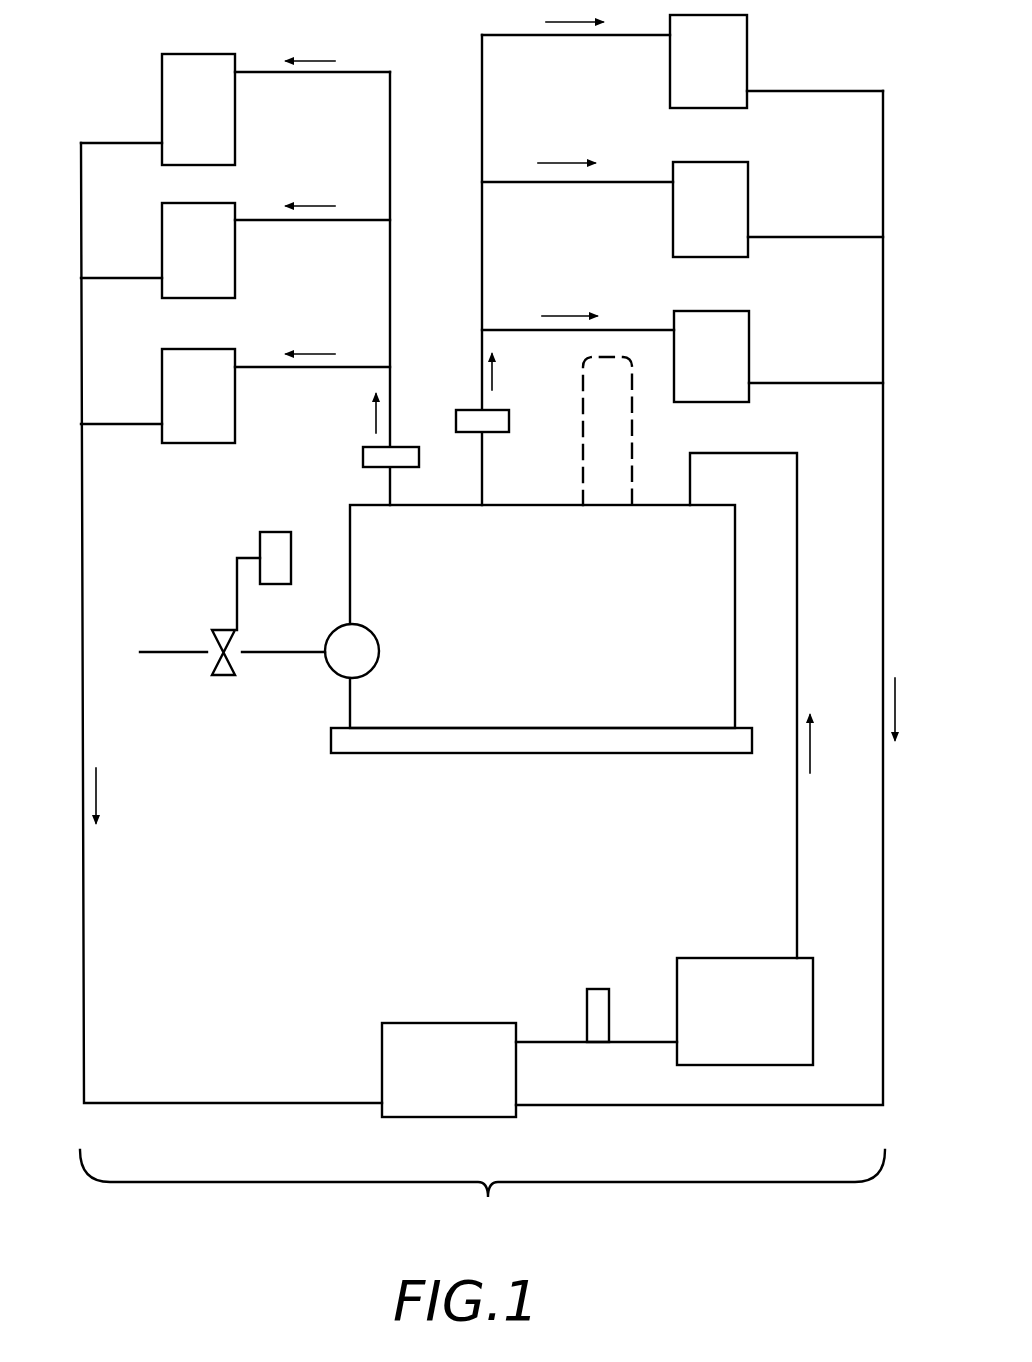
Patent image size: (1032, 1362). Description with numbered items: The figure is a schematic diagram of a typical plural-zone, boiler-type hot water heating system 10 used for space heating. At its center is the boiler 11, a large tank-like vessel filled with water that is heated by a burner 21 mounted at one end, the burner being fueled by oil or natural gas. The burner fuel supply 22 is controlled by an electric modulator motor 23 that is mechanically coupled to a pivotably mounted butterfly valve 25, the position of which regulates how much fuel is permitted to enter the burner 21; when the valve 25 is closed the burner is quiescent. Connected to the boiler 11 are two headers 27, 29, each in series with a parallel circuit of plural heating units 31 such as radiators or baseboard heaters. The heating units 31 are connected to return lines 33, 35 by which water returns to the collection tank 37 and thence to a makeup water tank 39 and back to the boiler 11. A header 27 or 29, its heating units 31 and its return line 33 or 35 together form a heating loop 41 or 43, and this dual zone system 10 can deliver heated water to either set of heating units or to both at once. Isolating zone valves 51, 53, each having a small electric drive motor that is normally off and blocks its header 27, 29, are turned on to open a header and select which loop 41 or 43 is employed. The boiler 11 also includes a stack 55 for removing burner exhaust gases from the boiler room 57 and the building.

The system 10 is at (482, 1190).
The boiler 11 is at (590, 665).
The burner 21 is at (343, 667).
The burner fuel supply 22 is at (175, 653).
The electric modulator motor 23 is at (273, 530).
The butterfly valve 25 is at (228, 673).
The header 27 is at (390, 492).
The header 29 is at (482, 480).
The heating units 31 is at (229, 197).
The return line 33 is at (82, 582).
The return line 35 is at (883, 588).
The collection tank 37 is at (432, 1022).
The makeup water tank 39 is at (740, 958).
The heating loop 41 is at (126, 108).
The heating loop 43 is at (783, 68).
The zone valve 51 is at (408, 455).
The zone valve 53 is at (495, 415).
The stack 55 is at (628, 443).
The boiler room 57 is at (266, 899).